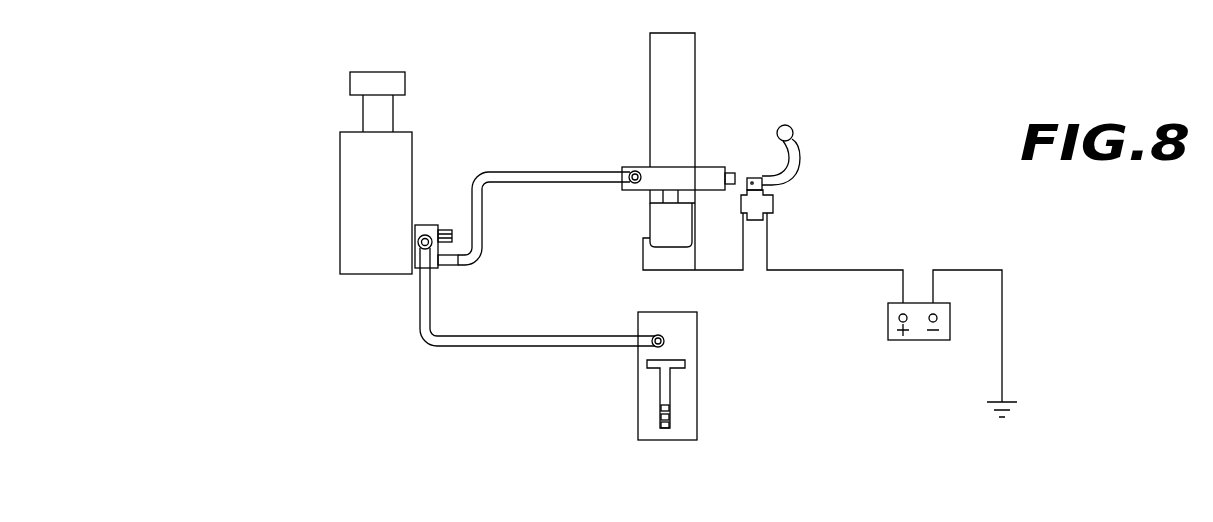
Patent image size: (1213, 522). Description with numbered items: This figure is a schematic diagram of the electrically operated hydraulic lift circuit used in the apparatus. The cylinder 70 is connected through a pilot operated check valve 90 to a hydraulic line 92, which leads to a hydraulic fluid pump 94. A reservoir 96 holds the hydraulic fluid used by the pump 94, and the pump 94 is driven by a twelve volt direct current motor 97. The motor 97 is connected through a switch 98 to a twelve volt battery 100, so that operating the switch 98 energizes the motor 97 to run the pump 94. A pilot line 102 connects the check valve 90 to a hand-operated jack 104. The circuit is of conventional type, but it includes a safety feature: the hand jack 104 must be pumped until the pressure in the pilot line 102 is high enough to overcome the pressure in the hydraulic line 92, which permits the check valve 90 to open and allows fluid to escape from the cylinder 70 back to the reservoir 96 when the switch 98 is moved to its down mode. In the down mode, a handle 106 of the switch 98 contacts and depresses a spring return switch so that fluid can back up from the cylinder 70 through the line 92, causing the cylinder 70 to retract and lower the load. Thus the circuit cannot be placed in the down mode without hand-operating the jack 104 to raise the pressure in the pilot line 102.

The cylinder 70 is at (408, 150).
The pilot operated check valve 90 is at (426, 224).
The hydraulic line 92 is at (572, 136).
The hydraulic fluid pump 94 is at (698, 168).
The reservoir 96 is at (660, 78).
The 12 volt d.c. motor 97 is at (689, 225).
The switch 98 is at (775, 203).
The 12 volt battery 100 is at (888, 313).
The pilot line 102 is at (562, 330).
The hand-operated jack 104 is at (690, 360).
The switch lever 106 is at (733, 168).